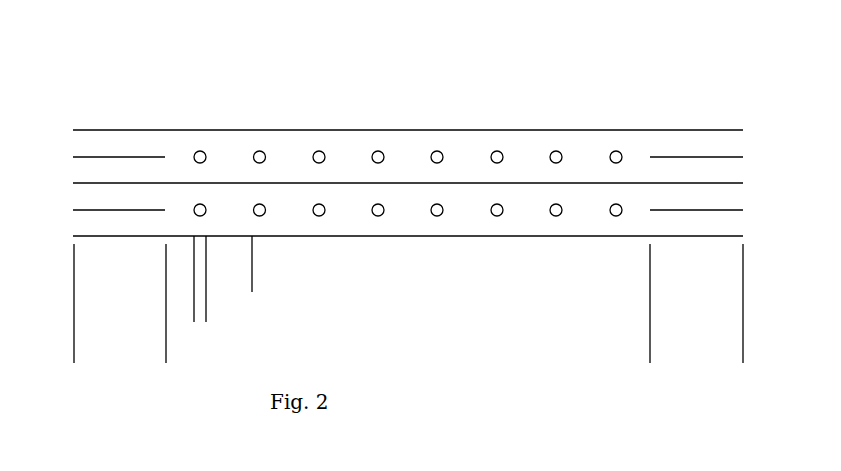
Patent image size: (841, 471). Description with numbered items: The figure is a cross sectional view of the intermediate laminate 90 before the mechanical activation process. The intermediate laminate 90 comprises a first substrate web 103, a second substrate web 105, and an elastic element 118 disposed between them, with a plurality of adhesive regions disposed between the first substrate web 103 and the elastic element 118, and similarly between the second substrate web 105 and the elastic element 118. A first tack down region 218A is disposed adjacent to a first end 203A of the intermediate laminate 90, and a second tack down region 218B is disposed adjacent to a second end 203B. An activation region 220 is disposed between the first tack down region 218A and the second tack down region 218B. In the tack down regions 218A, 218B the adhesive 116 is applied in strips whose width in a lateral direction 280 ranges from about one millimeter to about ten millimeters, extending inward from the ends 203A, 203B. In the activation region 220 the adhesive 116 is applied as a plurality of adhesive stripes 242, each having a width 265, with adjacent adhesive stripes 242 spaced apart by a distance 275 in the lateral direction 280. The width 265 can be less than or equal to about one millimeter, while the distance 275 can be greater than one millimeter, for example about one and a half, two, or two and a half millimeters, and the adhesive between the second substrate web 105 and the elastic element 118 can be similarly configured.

The intermediate laminate 90 is at (677, 89).
The first substrate web 103 is at (712, 130).
The second substrate web 105 is at (742, 236).
The adhesive 116 is at (83, 157).
The elastic element 118 is at (742, 183).
The first end 203A is at (62, 183).
The second end 203B is at (750, 169).
The adhesive stripes 242 is at (437, 151).
The first tack down region 218A is at (166, 355).
The second tack down region 218B is at (743, 355).
The activation region 220 is at (166, 355).
The width 265 is at (178, 317).
The distance 275 is at (206, 288).
The lateral direction 280 is at (500, 402).